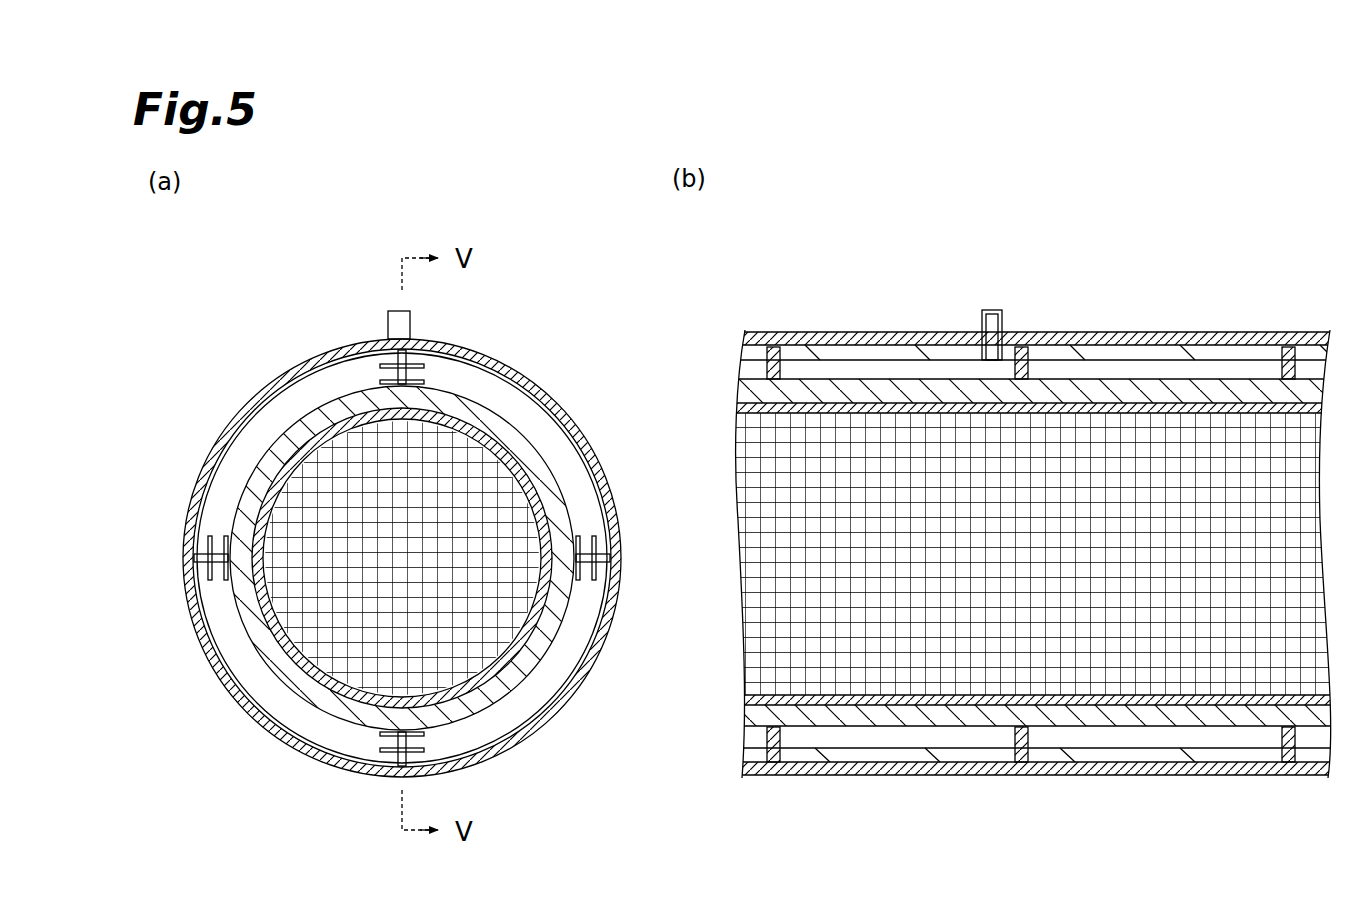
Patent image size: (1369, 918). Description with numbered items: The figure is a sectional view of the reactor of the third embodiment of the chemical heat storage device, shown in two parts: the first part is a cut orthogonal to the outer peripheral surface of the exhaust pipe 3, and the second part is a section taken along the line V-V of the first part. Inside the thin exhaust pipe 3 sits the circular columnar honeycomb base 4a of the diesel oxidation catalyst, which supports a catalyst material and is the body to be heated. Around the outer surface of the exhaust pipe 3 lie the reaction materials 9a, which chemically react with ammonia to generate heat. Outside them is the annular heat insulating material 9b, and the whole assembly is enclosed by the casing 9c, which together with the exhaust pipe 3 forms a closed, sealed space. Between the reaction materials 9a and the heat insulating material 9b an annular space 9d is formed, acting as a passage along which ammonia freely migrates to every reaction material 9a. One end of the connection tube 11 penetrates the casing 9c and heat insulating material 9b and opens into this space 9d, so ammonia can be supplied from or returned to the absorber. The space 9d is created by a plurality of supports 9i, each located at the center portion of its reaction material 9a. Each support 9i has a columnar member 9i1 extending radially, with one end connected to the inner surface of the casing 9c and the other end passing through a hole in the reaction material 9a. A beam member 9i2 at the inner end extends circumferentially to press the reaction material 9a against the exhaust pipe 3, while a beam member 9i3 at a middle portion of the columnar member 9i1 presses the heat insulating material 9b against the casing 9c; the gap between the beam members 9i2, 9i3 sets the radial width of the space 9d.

The exhaust pipe 3 is at (316, 674).
The honeycomb base 4a is at (346, 660).
The reaction material 9a is at (263, 455).
The heat insulating material 9b is at (191, 637).
The casing 9c is at (199, 585).
The space 9d is at (246, 660).
The support 9i is at (381, 370).
The columnar member 9i1 is at (412, 365).
The beam member 9i2 is at (413, 386).
The beam member 9i3 is at (413, 372).
The connection tube 11 is at (414, 325).